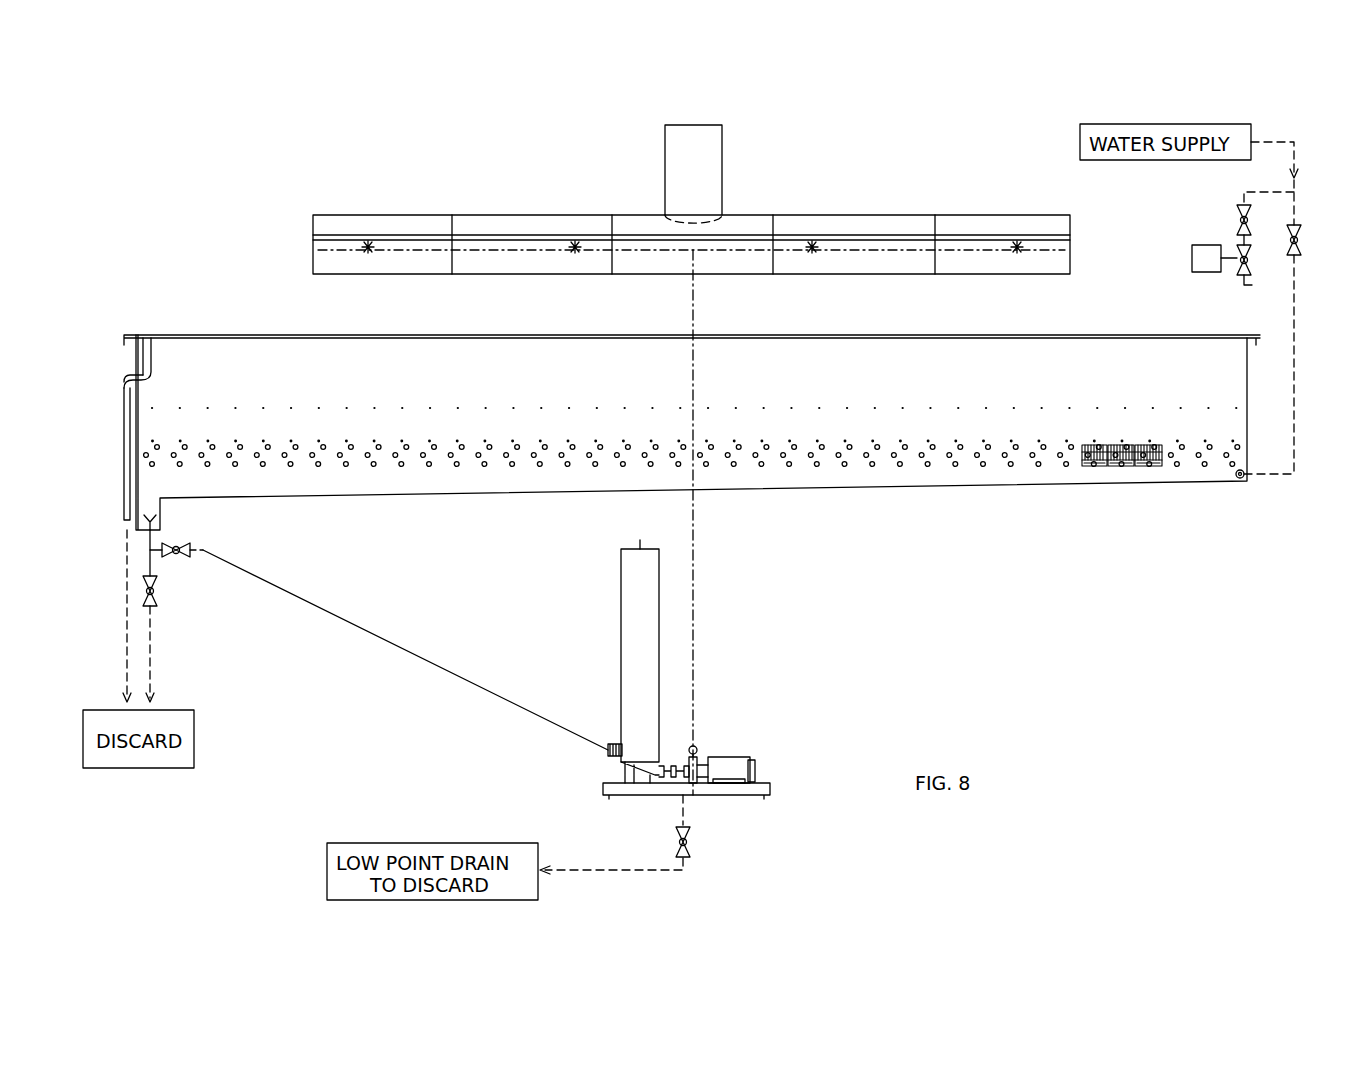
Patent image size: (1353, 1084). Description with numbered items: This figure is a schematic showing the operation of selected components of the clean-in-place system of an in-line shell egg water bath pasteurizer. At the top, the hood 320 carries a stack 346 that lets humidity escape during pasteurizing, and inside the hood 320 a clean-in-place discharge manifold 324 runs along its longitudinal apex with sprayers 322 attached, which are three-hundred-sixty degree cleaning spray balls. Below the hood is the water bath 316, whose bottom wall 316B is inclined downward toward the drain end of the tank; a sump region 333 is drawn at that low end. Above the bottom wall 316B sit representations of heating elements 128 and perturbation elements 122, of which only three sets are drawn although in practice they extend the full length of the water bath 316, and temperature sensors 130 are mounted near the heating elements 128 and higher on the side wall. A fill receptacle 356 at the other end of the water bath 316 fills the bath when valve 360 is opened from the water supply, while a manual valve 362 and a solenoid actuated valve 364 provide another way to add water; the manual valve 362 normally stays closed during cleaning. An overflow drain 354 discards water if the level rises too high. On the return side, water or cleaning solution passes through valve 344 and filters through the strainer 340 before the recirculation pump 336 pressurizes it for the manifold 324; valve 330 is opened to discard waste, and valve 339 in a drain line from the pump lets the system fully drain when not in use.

The hood 320 is at (866, 222).
The sprayers 322 is at (370, 242).
The clean-in-place discharge manifold 324 is at (489, 235).
The stack 346 is at (713, 163).
The valve 360 is at (1302, 248).
The manual valve 362 is at (1237, 222).
The solenoid actuated valve 364 is at (1192, 260).
The water bath 316 is at (704, 498).
The bottom wall 316B is at (806, 486).
The temperature sensors 130 is at (983, 408).
The heating elements 128 is at (1110, 445).
The perturbation elements 122 is at (1093, 467).
The fill receptacle 356 is at (1242, 480).
The overflow drain 354 is at (123, 392).
The sump 333 is at (164, 518).
The valve 344 is at (186, 546).
The valve 330 is at (158, 592).
The strainer 340 is at (631, 652).
The recirculation pump 336 is at (745, 762).
The valve 339 is at (690, 844).